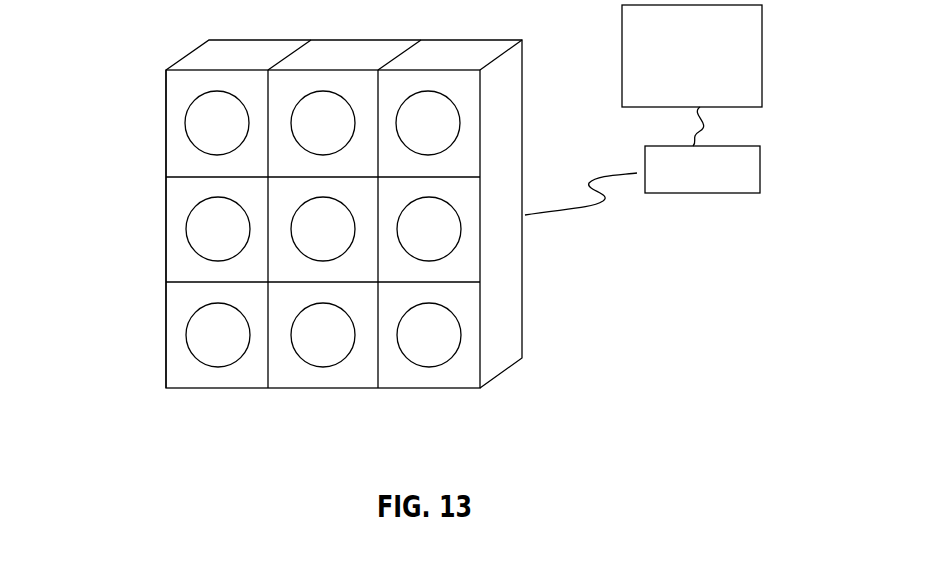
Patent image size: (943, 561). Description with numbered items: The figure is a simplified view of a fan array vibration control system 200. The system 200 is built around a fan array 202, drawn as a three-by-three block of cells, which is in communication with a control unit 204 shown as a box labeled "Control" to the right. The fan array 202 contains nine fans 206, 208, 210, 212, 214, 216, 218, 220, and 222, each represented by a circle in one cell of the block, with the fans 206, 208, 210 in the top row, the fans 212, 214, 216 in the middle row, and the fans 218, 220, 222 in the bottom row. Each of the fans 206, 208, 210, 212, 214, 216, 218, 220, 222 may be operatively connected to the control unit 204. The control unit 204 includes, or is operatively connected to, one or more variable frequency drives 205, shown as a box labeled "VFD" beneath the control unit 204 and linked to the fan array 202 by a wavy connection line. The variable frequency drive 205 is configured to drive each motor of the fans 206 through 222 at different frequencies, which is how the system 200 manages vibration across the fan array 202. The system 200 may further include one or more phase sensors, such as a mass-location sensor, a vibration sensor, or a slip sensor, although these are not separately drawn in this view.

The fan array vibration control system 200 is at (146, 33).
The fan array 202 is at (155, 70).
The control unit 204 is at (762, 60).
The variable frequency drive 205 is at (762, 167).
The fan 206 is at (197, 136).
The fan 208 is at (303, 136).
The fan 210 is at (408, 136).
The fan 212 is at (198, 242).
The fan 214 is at (303, 242).
The fan 216 is at (409, 242).
The fan 218 is at (198, 348).
The fan 220 is at (303, 348).
The fan 222 is at (409, 348).